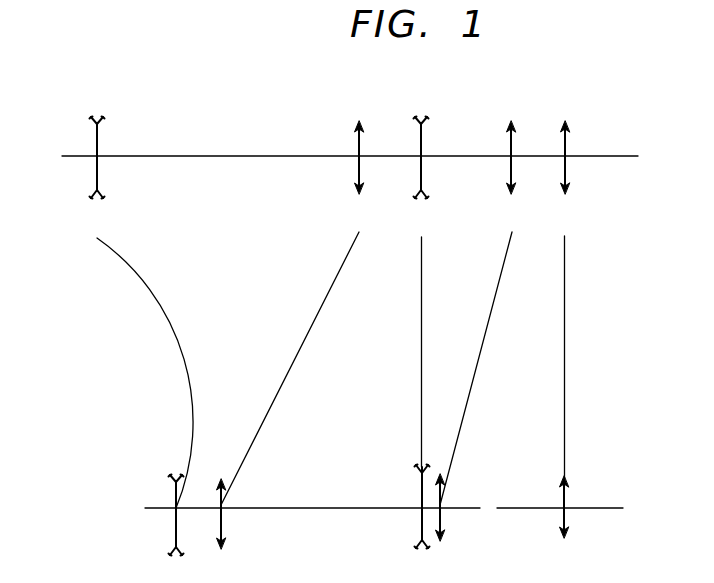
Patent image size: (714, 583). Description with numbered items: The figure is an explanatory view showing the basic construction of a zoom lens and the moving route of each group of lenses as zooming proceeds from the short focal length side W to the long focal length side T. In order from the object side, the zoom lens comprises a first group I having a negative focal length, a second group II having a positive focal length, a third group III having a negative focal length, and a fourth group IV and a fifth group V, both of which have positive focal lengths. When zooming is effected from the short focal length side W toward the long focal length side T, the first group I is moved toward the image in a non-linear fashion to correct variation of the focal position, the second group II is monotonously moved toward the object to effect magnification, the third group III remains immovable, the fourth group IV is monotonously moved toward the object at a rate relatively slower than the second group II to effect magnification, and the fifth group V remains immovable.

The first group I is at (93, 83).
The second group II is at (352, 83).
The third group III is at (412, 83).
The fourth group IV is at (500, 99).
The fifth group V is at (556, 83).
The short focal length side W is at (362, 156).
The long focal length side T is at (394, 508).